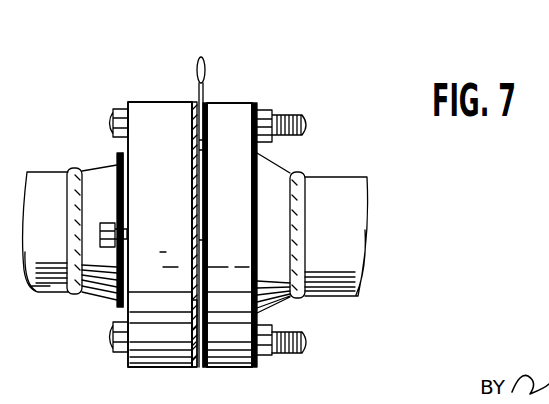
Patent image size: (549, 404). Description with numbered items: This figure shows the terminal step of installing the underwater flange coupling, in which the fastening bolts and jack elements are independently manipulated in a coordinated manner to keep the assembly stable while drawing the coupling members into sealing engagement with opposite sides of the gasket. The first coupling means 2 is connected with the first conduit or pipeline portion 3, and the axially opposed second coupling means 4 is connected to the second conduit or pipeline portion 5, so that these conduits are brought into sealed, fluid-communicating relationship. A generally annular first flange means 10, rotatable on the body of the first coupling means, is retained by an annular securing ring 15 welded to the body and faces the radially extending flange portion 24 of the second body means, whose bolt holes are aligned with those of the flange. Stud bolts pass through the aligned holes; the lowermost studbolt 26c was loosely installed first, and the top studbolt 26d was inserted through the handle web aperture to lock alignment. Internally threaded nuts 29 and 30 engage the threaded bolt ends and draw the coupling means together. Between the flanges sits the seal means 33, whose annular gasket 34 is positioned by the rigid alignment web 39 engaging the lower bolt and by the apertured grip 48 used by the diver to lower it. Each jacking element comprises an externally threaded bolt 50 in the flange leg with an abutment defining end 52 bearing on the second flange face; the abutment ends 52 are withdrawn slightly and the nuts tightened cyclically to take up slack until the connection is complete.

The first coupling means 2 is at (150, 113).
The first conduit or pipeline portion 3 is at (50, 182).
The second coupling means 4 is at (237, 117).
The second conduit or pipeline portion 5 is at (342, 200).
The first flange means 10 is at (168, 225).
The annular securing ring 15 is at (118, 157).
The flange portion of second body means 24 is at (234, 177).
The lowermost studbolt 26c is at (281, 355).
The top studbolt 26d is at (289, 138).
The internally threaded nut 29 is at (115, 361).
The internally threaded nut 30 is at (266, 358).
The seal means 33 is at (204, 90).
The annular seal or gasket 34 is at (160, 234).
The bifurcated alignment means or web 39 is at (191, 333).
The apertured grip 48 is at (205, 64).
The externally threaded bolt 50 is at (102, 230).
The abutment defining end 52 is at (204, 237).